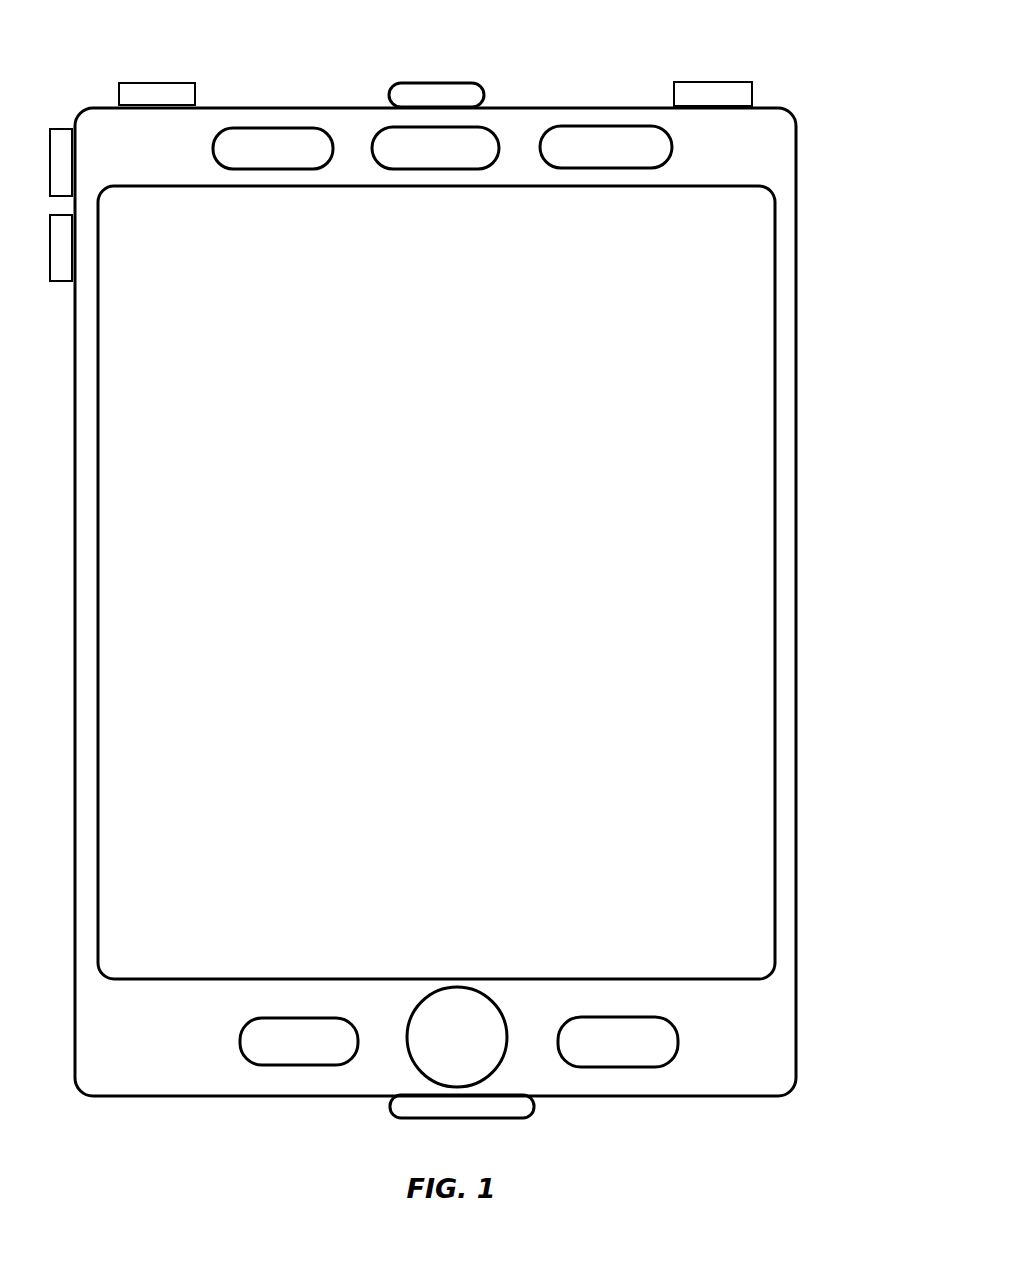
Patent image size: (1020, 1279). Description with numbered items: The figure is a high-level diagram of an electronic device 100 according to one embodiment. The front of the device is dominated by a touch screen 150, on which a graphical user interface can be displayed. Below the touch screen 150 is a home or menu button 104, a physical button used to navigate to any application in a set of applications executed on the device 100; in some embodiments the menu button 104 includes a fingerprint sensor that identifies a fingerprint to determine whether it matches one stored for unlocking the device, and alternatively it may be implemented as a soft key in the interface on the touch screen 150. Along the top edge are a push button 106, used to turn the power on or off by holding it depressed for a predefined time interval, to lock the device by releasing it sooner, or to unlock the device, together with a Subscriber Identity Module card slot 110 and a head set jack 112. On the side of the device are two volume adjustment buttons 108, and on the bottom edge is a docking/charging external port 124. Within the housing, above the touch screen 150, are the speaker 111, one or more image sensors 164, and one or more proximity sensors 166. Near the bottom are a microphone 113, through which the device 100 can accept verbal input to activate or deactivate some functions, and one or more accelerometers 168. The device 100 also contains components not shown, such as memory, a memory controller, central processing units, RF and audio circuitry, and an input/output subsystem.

The electronic device 100 is at (830, 107).
The menu button 104 is at (457, 1037).
The push button 106 is at (157, 94).
The volume adjustment buttons 108 is at (61, 205).
The Subscriber Identity Module (SIM) card slot 110 is at (436, 95).
The speaker 111 is at (273, 148).
The head set jack 112 is at (713, 94).
The microphone 113 is at (299, 1041).
The docking/charging external port 124 is at (462, 1106).
The touch screen 150 is at (773, 478).
The image sensors 164 is at (435, 148).
The proximity sensors 166 is at (606, 147).
The accelerometers 168 is at (618, 1042).